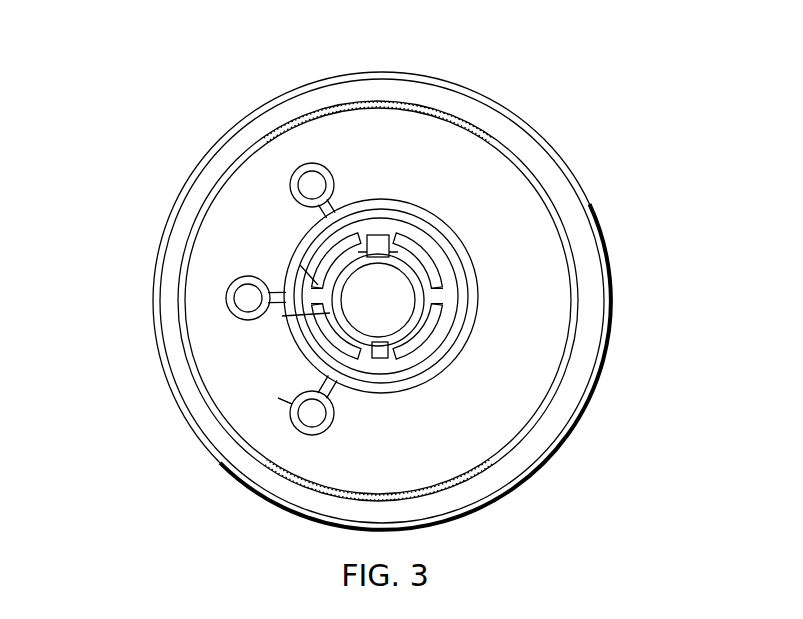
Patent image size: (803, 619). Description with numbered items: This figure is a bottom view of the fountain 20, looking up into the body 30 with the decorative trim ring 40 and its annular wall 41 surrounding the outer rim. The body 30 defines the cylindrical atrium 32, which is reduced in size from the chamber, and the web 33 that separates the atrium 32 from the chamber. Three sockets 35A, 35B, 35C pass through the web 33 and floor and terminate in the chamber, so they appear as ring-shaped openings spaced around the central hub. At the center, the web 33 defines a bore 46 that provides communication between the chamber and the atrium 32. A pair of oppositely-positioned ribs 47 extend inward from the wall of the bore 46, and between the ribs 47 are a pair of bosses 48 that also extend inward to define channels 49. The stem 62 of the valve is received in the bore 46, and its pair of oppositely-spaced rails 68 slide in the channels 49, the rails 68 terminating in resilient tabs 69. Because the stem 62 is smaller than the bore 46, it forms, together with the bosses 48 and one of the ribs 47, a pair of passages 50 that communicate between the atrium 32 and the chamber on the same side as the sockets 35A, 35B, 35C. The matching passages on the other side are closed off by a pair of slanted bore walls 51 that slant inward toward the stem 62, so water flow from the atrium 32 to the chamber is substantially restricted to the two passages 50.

The fountain 20 is at (570, 143).
The body 30 is at (175, 197).
The trim ring 40 is at (152, 328).
The annular wall 41 is at (290, 125).
The bore 46 is at (352, 250).
The tabs 69 is at (375, 222).
The web 33 is at (363, 222).
The slanted bore walls 51 is at (435, 288).
The rails 68 is at (347, 315).
The atrium 32 is at (392, 372).
The passages 50 is at (323, 257).
The socket 35A is at (296, 431).
The socket 35B is at (234, 280).
The socket 35C is at (289, 185).
The ribs 47 is at (300, 265).
The stem 62 is at (282, 316).
The bosses 48 is at (278, 398).
The channels 49 is at (278, 398).